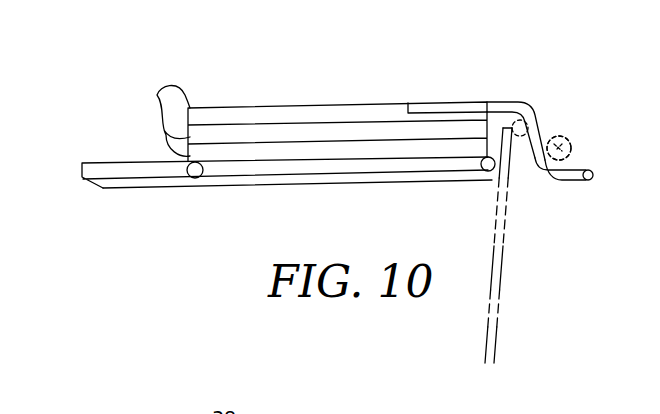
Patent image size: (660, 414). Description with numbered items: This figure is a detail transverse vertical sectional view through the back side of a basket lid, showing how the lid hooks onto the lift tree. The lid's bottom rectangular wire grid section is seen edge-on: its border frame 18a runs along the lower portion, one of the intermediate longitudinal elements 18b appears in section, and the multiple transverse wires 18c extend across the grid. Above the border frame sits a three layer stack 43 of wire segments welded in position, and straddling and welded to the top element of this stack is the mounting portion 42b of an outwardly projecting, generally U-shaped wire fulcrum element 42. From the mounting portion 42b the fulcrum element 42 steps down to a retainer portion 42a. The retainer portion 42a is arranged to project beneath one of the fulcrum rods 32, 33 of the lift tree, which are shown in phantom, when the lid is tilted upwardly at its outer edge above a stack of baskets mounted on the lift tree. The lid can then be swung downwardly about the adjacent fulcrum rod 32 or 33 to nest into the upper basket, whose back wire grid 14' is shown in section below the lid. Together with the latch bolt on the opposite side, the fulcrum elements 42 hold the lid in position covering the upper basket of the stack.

The border frame 18a is at (121, 163).
The intermediate longitudinal element 18b is at (194, 178).
The transverse wire 18c is at (433, 181).
The three layer stack 43 is at (157, 95).
The fulcrum element 42 is at (531, 102).
The retainer portion 42a is at (568, 181).
The mounting portion 42b is at (436, 110).
The fulcrum rod 32 is at (567, 132).
The fulcrum rod 33 is at (559, 148).
The back wire grid 14' is at (528, 245).